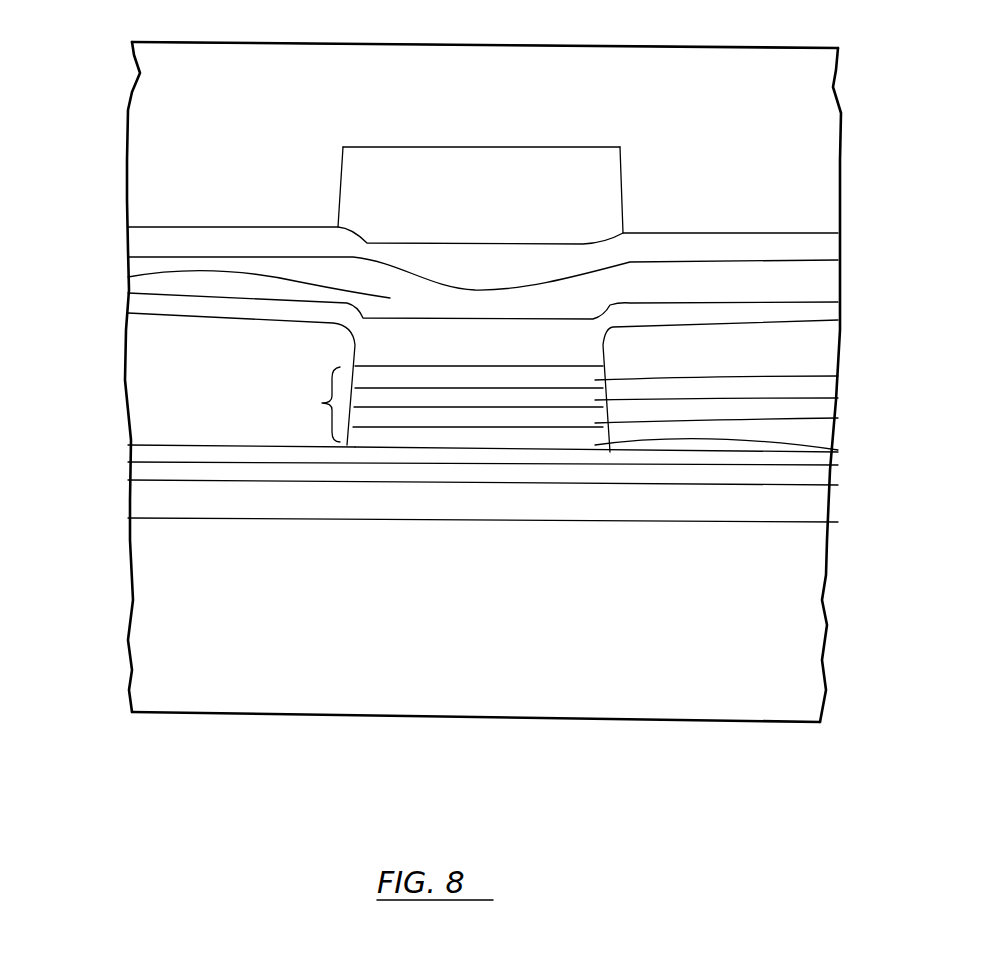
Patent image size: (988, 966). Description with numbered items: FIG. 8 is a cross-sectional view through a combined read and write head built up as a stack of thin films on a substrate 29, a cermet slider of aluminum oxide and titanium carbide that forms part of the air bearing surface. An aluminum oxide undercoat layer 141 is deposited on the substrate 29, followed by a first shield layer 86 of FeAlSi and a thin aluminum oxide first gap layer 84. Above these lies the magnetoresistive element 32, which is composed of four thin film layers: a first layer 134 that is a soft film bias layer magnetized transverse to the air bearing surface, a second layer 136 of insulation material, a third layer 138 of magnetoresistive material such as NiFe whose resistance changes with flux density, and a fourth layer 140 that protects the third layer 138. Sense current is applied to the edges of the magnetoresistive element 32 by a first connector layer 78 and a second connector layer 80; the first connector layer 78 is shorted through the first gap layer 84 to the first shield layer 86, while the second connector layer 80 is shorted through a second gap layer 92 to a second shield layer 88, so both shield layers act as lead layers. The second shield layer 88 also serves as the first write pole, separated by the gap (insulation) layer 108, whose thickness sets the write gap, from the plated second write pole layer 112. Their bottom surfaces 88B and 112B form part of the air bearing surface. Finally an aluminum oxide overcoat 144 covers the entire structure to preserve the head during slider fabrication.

The overcoat 144 is at (775, 115).
The second write pole layer 112 is at (622, 117).
The bottom surface of second write pole layer 112B is at (537, 182).
The gap layer 108 is at (775, 248).
The second shield layer 88 is at (800, 283).
The bottom surface of first write pole layer 88B is at (128, 277).
The second gap layer 92 is at (800, 312).
The second connector layer 80 is at (777, 348).
The first connector layer 78 is at (152, 377).
The magnetoresistive element 32 is at (315, 403).
The fourth layer 140 is at (838, 376).
The third layer 138 is at (838, 398).
The second layer 136 is at (838, 418).
The first layer 134 is at (838, 450).
The first gap layer 84 is at (135, 452).
The first shield layer 86 is at (140, 470).
The undercoat layer 141 is at (608, 503).
The substrate 29 is at (780, 625).